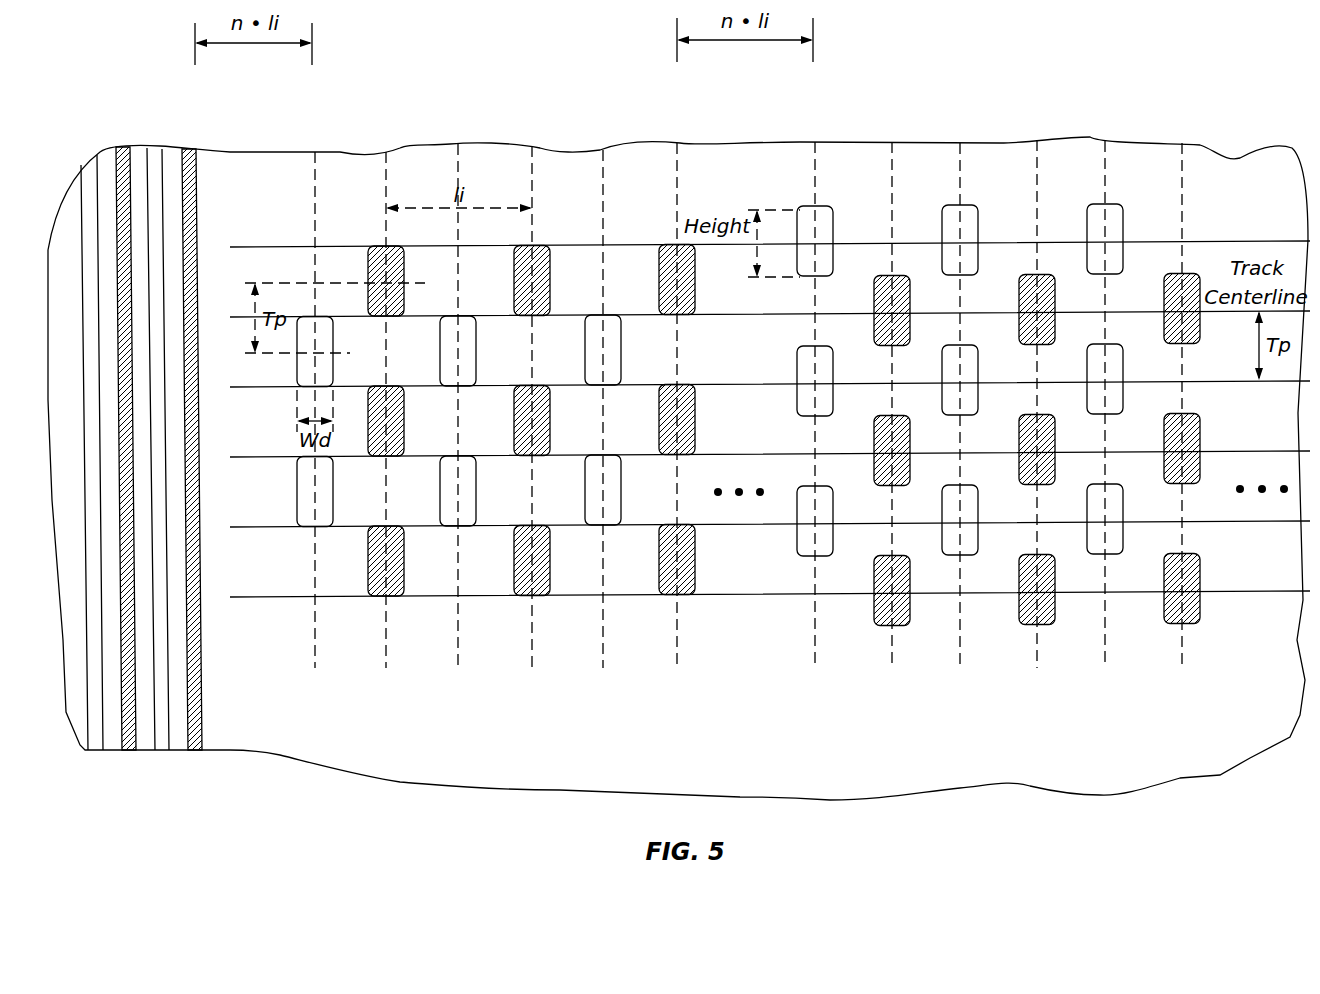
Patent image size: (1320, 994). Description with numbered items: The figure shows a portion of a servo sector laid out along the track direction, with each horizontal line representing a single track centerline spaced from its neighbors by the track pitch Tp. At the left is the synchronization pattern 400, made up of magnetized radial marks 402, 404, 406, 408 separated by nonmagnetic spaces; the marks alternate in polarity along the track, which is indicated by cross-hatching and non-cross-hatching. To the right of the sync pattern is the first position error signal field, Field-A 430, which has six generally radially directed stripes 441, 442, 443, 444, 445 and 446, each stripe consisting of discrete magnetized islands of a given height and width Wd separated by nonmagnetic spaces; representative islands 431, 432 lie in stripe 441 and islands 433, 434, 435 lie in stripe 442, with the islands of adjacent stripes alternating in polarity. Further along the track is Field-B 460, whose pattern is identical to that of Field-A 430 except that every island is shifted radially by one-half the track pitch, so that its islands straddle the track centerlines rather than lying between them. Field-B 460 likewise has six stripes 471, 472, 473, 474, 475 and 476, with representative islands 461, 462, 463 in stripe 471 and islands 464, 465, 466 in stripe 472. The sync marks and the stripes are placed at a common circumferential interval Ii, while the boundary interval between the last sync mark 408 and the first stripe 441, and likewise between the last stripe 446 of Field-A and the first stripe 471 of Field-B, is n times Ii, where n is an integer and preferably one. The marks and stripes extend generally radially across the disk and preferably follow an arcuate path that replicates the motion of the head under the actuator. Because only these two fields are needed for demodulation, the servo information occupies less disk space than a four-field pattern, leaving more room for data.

The synchronization pattern 400 is at (144, 457).
The magnetized radial mark 402 is at (91, 167).
The magnetized radial mark 404 is at (125, 148).
The magnetized radial mark 406 is at (153, 152).
The magnetized radial mark 408 is at (190, 152).
The Field-A 430 is at (528, 450).
The island 431 is at (344, 492).
The island 432 is at (335, 340).
The island 433 is at (406, 548).
The island 434 is at (406, 410).
The island 435 is at (406, 270).
The stripe 441 is at (315, 653).
The stripe 442 is at (386, 653).
The stripe 443 is at (458, 653).
The stripe 444 is at (532, 653).
The stripe 445 is at (603, 653).
The stripe 446 is at (677, 653).
The Field-B 460 is at (1015, 446).
The island 461 is at (835, 502).
The island 462 is at (835, 362).
The island 463 is at (835, 222).
The island 464 is at (866, 591).
The island 465 is at (874, 445).
The island 466 is at (874, 305).
The stripe 471 is at (815, 653).
The stripe 472 is at (892, 653).
The stripe 473 is at (960, 653).
The stripe 474 is at (1037, 653).
The stripe 475 is at (1105, 653).
The stripe 476 is at (1182, 653).